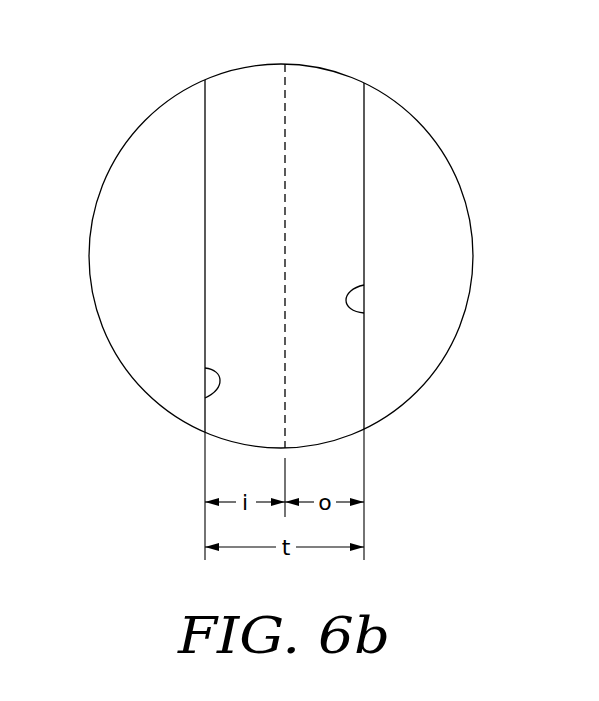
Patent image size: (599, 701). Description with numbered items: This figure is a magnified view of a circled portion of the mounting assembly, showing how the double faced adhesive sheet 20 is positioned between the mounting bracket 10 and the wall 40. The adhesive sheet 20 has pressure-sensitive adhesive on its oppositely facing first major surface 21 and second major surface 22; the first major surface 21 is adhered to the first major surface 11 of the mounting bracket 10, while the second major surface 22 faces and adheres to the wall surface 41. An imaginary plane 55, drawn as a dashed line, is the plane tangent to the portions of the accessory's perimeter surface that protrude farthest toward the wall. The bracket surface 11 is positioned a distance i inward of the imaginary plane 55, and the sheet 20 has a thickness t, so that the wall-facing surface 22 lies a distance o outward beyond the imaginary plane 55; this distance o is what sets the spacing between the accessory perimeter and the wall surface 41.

The mounting bracket 10 is at (108, 273).
The first major surface of mounting bracket 11 is at (205, 349).
The double faced adhesive sheet 20 is at (327, 88).
The first major surface of adhesive sheet 21 is at (205, 398).
The second major surface of adhesive sheet 22 is at (365, 122).
The wall 40 is at (433, 187).
The wall surface 41 is at (364, 285).
The imaginary plane 55 is at (285, 365).